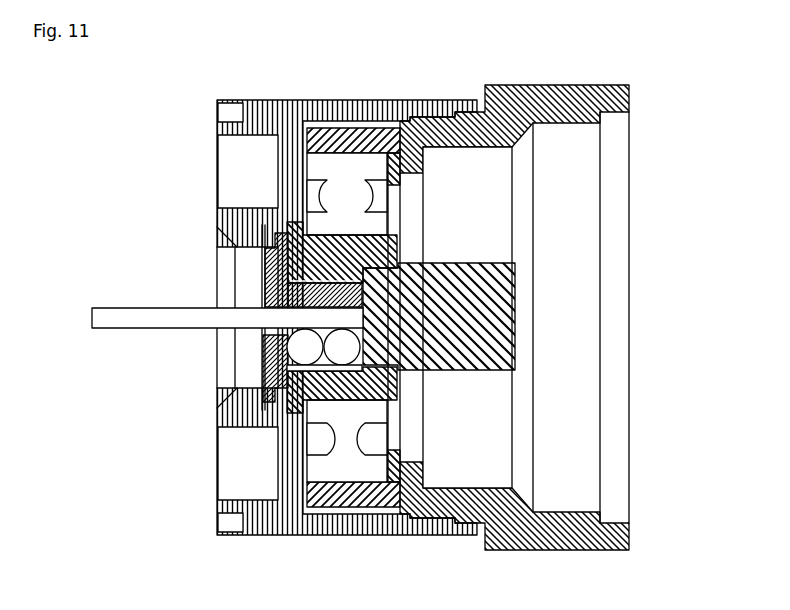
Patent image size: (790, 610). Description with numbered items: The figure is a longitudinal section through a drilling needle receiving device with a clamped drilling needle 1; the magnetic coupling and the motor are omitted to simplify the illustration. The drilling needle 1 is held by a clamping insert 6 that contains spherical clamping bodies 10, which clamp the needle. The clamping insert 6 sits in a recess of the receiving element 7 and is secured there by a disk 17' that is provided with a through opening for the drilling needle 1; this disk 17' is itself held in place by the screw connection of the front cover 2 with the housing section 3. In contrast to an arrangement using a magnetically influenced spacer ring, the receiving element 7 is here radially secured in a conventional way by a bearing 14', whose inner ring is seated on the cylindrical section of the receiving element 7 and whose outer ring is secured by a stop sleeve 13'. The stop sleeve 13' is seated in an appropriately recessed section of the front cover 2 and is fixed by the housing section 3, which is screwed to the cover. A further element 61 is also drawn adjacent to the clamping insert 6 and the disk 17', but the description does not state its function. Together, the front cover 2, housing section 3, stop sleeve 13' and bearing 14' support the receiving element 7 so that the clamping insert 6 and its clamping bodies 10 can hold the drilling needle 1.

The drilling needle 1 is at (113, 317).
The front cover 2 is at (267, 118).
The housing section 3 is at (506, 85).
The clamping insert 6 is at (252, 366).
The receiving element 7 is at (521, 350).
The spherical clamping bodies 10 is at (297, 349).
The stop sleeve 13' is at (343, 181).
The bearing 14' is at (343, 471).
The disk 17' is at (261, 292).
The sleeve 61 is at (262, 285).